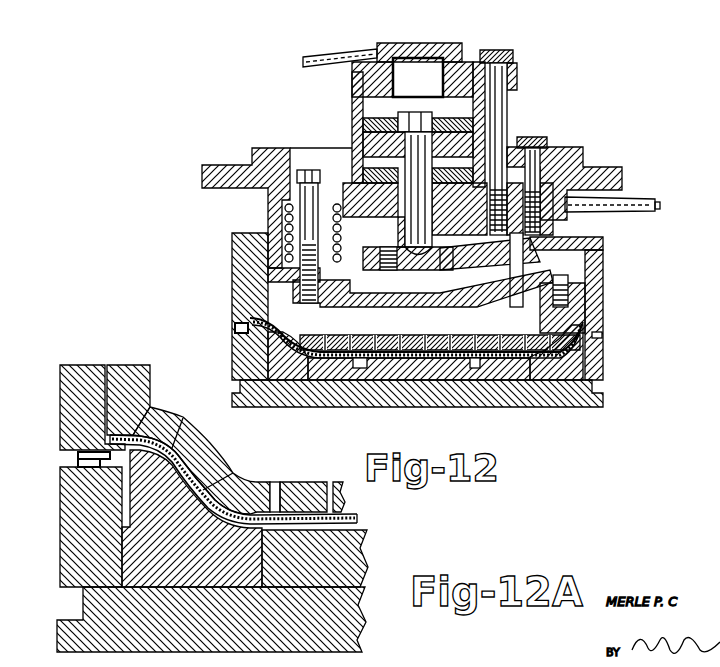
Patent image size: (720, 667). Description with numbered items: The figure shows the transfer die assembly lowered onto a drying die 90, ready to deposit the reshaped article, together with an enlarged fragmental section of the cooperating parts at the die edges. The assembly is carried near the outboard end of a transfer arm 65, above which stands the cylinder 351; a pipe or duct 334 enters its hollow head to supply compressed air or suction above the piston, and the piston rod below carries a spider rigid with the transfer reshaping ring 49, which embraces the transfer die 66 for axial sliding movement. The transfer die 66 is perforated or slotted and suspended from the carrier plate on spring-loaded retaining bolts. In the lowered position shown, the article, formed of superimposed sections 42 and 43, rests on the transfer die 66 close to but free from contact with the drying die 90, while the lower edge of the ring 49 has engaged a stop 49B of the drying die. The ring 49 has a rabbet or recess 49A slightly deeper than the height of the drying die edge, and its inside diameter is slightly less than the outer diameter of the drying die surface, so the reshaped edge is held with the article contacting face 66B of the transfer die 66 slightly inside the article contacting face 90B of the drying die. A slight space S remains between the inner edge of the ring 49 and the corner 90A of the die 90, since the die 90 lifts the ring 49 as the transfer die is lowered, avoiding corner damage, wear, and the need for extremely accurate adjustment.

In FIG. 12, the pipe or duct 334 is at (326, 52).
In FIG. 12, the cylinder 351 is at (352, 105).
In FIG. 12, the transfer arm 65 is at (202, 172).
In FIG. 12, the transfer die 66 is at (258, 287).
In FIG. 12A, the transfer die 66 is at (150, 392).
In FIG. 12A, the article contacting face of the transfer die 66B is at (245, 481).
In FIG. 12, the transfer reshaping ring 49 is at (603, 300).
In FIG. 12A, the transfer reshaping ring 49 is at (76, 364).
In FIG. 12, the rabbet or recess 49A is at (252, 320).
In FIG. 12A, the rabbet or recess 49A is at (78, 452).
In FIG. 12, the stop 49B is at (245, 343).
In FIG. 12A, the stop 49B is at (78, 463).
In FIG. 12, the drying die 90 is at (603, 392).
In FIG. 12A, the drying die 90 is at (58, 548).
In FIG. 12A, the corner of the drying die 90A is at (200, 436).
In FIG. 12A, the article contacting face of the drying die 90B is at (367, 548).
In FIG. 12A, the superimposed section 42 is at (350, 515).
In FIG. 12A, the superimposed section 43 is at (359, 520).
In FIG. 12A, the space S is at (221, 485).